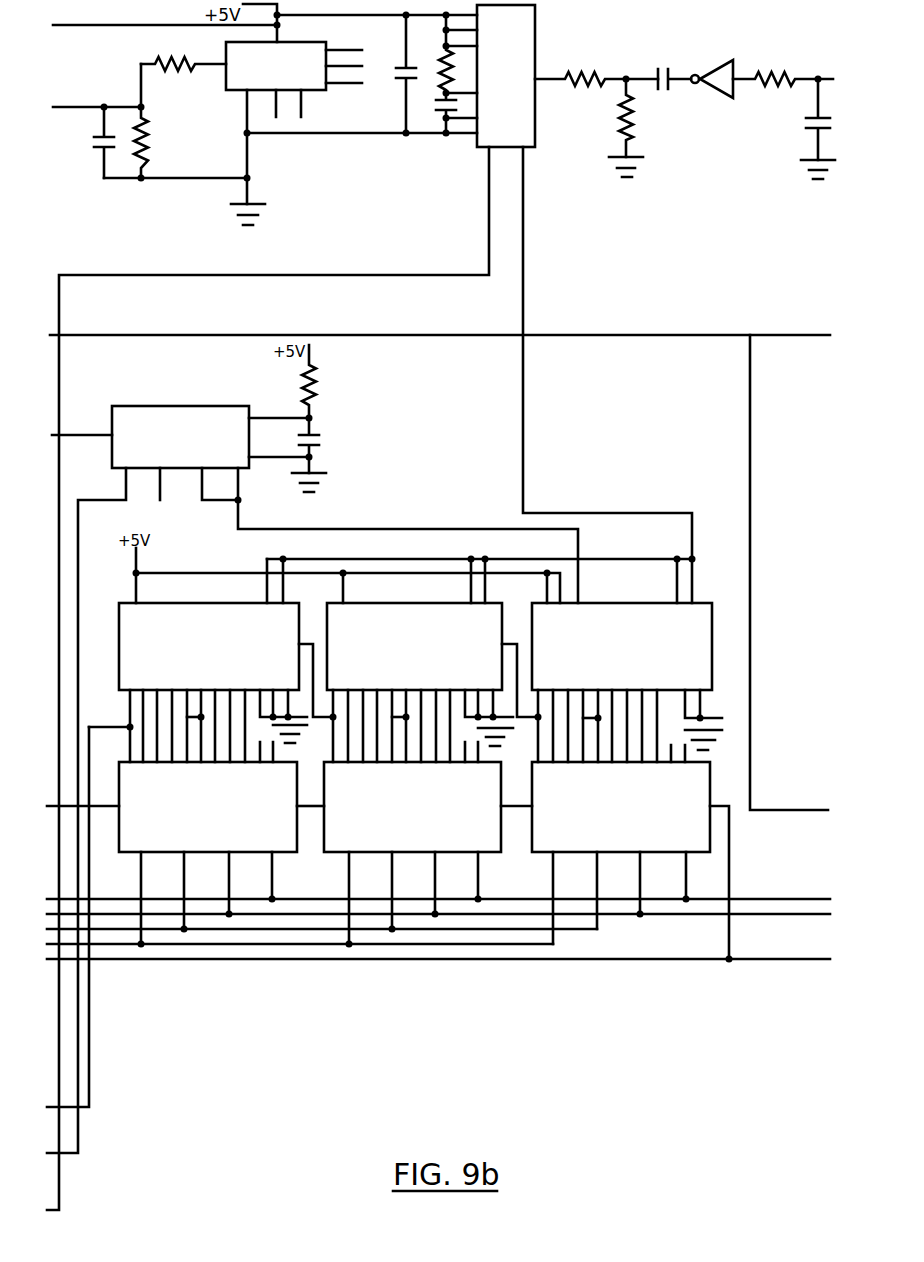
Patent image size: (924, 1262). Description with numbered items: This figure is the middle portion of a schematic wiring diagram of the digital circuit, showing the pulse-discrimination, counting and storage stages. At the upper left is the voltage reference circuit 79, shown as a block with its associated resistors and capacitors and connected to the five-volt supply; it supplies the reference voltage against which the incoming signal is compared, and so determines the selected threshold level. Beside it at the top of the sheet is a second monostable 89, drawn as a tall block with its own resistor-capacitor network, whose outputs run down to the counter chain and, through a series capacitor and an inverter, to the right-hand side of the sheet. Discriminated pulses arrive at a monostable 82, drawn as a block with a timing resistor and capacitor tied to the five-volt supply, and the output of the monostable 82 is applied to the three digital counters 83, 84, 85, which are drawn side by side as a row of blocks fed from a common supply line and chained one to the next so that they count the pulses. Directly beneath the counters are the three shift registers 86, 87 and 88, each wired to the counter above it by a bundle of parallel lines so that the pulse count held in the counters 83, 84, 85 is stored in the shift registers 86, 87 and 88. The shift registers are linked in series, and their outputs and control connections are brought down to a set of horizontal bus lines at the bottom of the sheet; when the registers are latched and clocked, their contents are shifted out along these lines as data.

The circuit 79 is at (226, 52).
The monostable 82 is at (190, 405).
The digital counter 83 is at (627, 682).
The digital counter 84 is at (434, 682).
The digital counter 85 is at (228, 682).
The shift register 86 is at (632, 862).
The shift register 87 is at (428, 855).
The shift register 88 is at (185, 855).
The monostable 89 is at (535, 39).